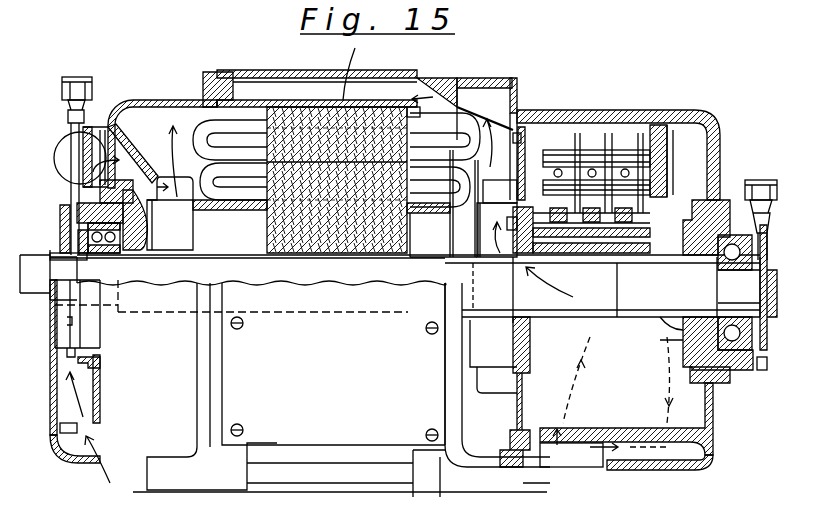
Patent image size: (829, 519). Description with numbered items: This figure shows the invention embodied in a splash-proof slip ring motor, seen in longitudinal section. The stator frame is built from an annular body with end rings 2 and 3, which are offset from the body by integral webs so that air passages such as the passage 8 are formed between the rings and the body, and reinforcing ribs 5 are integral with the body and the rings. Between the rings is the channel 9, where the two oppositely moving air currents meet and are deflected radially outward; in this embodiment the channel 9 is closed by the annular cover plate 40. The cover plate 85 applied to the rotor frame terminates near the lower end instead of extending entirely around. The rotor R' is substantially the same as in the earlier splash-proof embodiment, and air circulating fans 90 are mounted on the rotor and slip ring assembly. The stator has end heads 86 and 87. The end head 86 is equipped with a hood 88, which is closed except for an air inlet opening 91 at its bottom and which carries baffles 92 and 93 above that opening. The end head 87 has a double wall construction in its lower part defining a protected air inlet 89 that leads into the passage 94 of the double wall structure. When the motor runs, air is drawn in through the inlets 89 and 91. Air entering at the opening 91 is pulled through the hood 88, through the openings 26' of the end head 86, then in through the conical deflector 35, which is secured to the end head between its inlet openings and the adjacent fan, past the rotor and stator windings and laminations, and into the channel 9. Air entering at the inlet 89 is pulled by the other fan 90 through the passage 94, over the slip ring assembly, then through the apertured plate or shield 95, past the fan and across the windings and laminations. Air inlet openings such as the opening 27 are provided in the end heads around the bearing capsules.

The end ring 2 is at (217, 70).
The air inlet opening 27 is at (240, 98).
The channel 9 is at (303, 99).
The cover plate 85 is at (390, 79).
The end ring 3 is at (437, 80).
The reinforcing rib 5 is at (455, 77).
The air passage 8 is at (462, 82).
The end head 86 is at (173, 97).
The openings 26' is at (109, 130).
The conical deflector 35 is at (167, 139).
The annular cover plate 40 is at (185, 192).
The air circulating fan 90 is at (497, 218).
The rotor R' is at (350, 180).
The apertured plate or shield 95 is at (545, 148).
The end head 87 is at (607, 111).
The hood 88 is at (50, 377).
The baffle 93 is at (83, 365).
The air inlet opening 91 is at (92, 432).
The baffle 92 is at (65, 440).
The protected air inlet 89 is at (590, 448).
The passage 94 is at (660, 450).